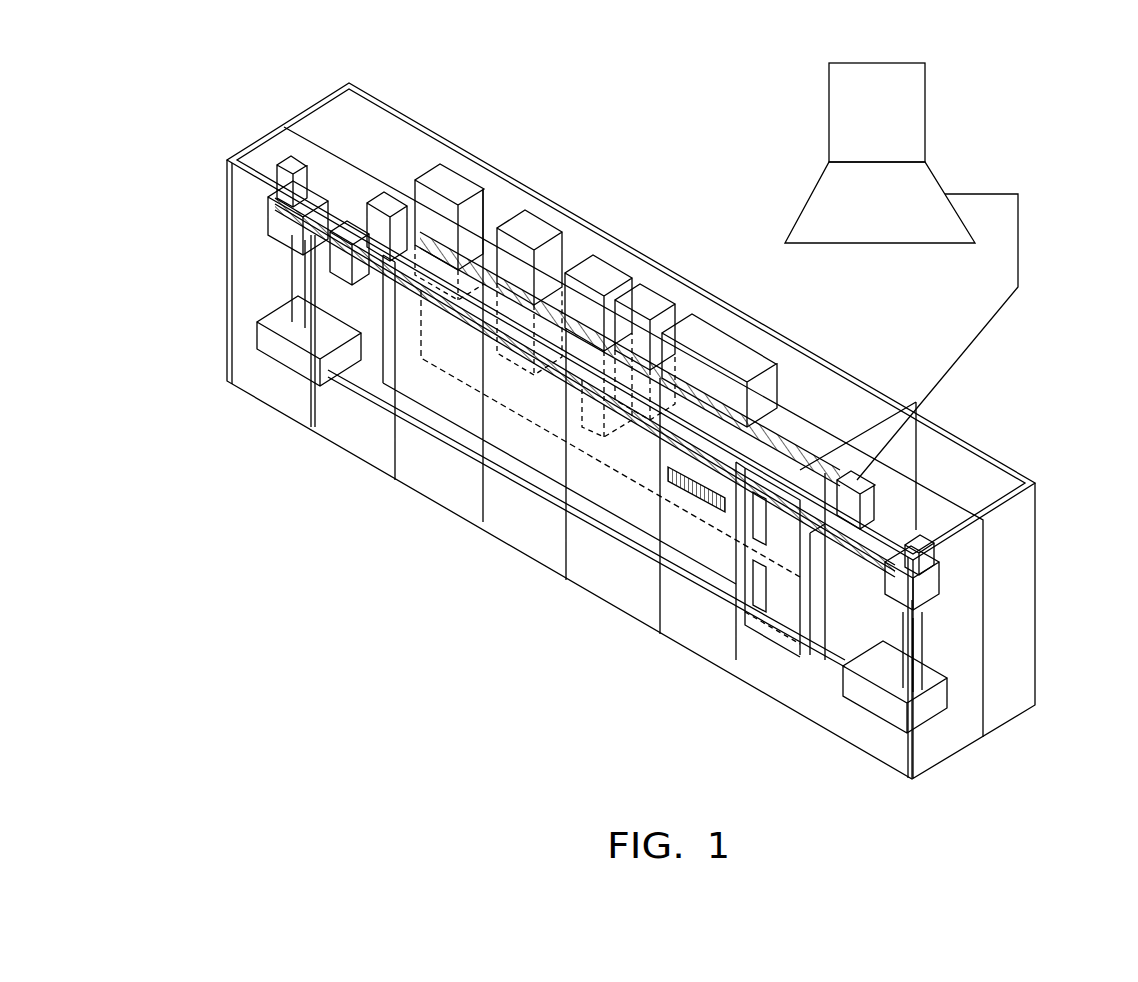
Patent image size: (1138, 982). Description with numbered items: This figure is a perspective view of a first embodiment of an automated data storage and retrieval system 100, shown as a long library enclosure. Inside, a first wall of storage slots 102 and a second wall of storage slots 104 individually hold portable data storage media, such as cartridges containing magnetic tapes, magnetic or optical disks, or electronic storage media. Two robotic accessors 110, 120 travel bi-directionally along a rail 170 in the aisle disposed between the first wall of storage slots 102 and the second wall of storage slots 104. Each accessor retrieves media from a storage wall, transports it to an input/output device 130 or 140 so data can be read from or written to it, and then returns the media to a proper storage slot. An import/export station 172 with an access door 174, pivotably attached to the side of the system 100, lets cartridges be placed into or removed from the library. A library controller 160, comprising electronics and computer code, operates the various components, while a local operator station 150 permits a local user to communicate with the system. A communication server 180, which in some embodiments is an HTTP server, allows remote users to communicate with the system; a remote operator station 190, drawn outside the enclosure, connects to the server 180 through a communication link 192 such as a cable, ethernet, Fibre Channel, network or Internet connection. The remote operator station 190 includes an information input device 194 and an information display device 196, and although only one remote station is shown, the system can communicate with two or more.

The automated data storage and retrieval system 100 is at (664, 673).
The first wall of storage slots 102 is at (472, 282).
The second wall of storage slots 104 is at (428, 398).
The accessor 110 is at (280, 220).
The accessor 120 is at (940, 585).
The input/output device 130 is at (608, 262).
The input/output device 140 is at (655, 300).
The local operator station 150 is at (548, 228).
The library controller 160 is at (450, 178).
The rail 170 is at (522, 500).
The import/export station 172 is at (778, 640).
The access door 174 is at (778, 606).
The communication server 180 is at (880, 483).
The remote operator station 190 is at (911, 271).
The communication link 192 is at (1018, 247).
The information input device 194 is at (868, 232).
The information display device 196 is at (913, 107).